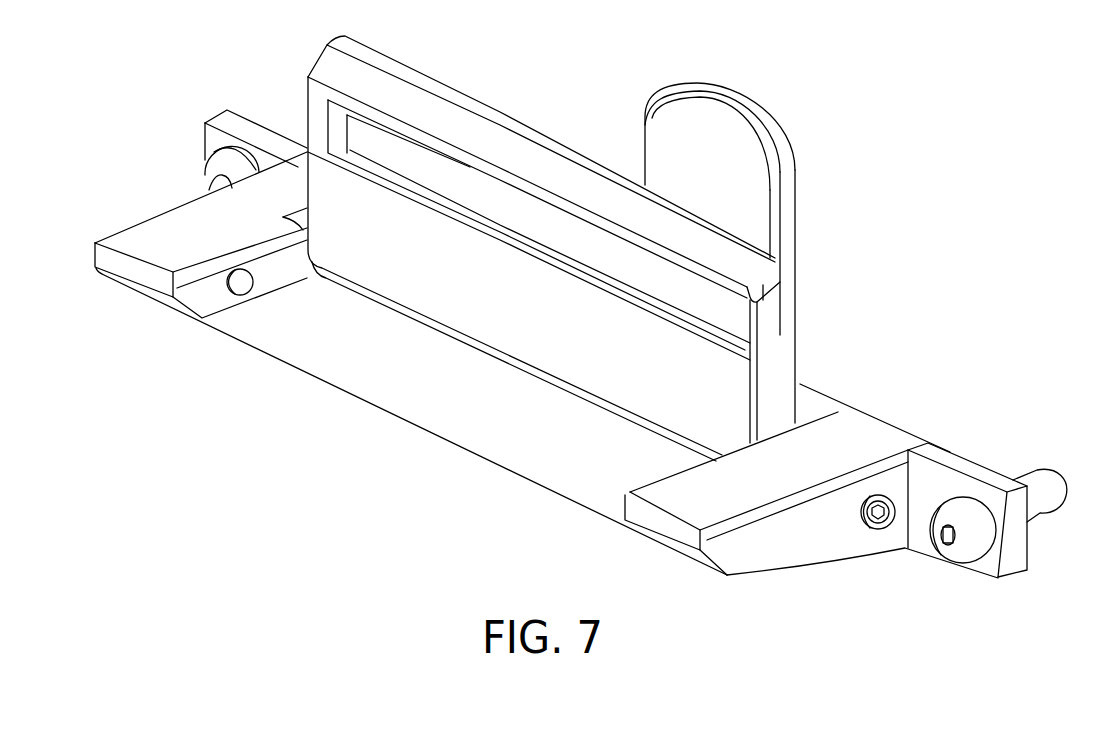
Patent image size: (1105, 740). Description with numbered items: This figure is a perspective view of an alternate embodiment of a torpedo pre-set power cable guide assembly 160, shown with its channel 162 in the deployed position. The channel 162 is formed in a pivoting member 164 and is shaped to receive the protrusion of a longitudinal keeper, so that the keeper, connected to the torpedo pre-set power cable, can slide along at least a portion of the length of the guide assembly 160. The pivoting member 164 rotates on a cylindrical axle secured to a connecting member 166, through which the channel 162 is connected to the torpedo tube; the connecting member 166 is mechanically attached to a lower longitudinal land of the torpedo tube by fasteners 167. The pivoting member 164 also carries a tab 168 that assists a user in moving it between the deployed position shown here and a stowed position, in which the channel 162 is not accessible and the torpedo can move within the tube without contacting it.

The torpedo pre-set power cable guide assembly 160 is at (858, 208).
The channel 162 is at (782, 330).
The pivoting member 164 is at (480, 98).
The connecting member 166 is at (950, 450).
The fasteners 167 is at (203, 172).
The tab 168 is at (758, 123).